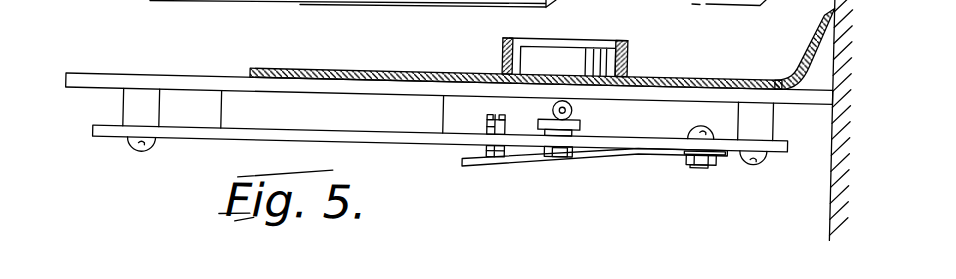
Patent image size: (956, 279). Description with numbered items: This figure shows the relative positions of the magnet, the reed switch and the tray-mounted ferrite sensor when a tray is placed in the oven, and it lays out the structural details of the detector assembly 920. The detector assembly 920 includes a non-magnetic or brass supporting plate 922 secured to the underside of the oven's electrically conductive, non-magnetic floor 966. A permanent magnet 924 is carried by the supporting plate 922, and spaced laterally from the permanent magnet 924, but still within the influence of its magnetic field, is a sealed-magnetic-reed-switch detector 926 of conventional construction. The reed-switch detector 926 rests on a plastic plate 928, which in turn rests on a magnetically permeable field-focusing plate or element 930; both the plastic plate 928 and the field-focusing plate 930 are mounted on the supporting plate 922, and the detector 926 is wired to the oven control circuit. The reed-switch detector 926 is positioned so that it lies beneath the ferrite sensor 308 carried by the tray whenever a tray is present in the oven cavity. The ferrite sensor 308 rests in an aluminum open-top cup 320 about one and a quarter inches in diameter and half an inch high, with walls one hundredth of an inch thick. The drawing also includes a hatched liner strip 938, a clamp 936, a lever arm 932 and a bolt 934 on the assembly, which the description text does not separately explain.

The oven floor 966 is at (89, 78).
The liner strip 938 is at (465, 65).
The supporting plate 922 is at (190, 137).
The permanent magnet 924 is at (350, 117).
The detector assembly 920 is at (462, 219).
The clamp 936 is at (487, 112).
The sealed-magnetic-reed-switch detector 926 is at (556, 87).
The plastic plate 928 is at (581, 104).
The field-focusing plate 930 is at (581, 105).
The lever arm 932 is at (474, 157).
The bolt 934 is at (701, 154).
The ferrite sensor 308 is at (608, 30).
The aluminum open-top cup 320 is at (629, 47).